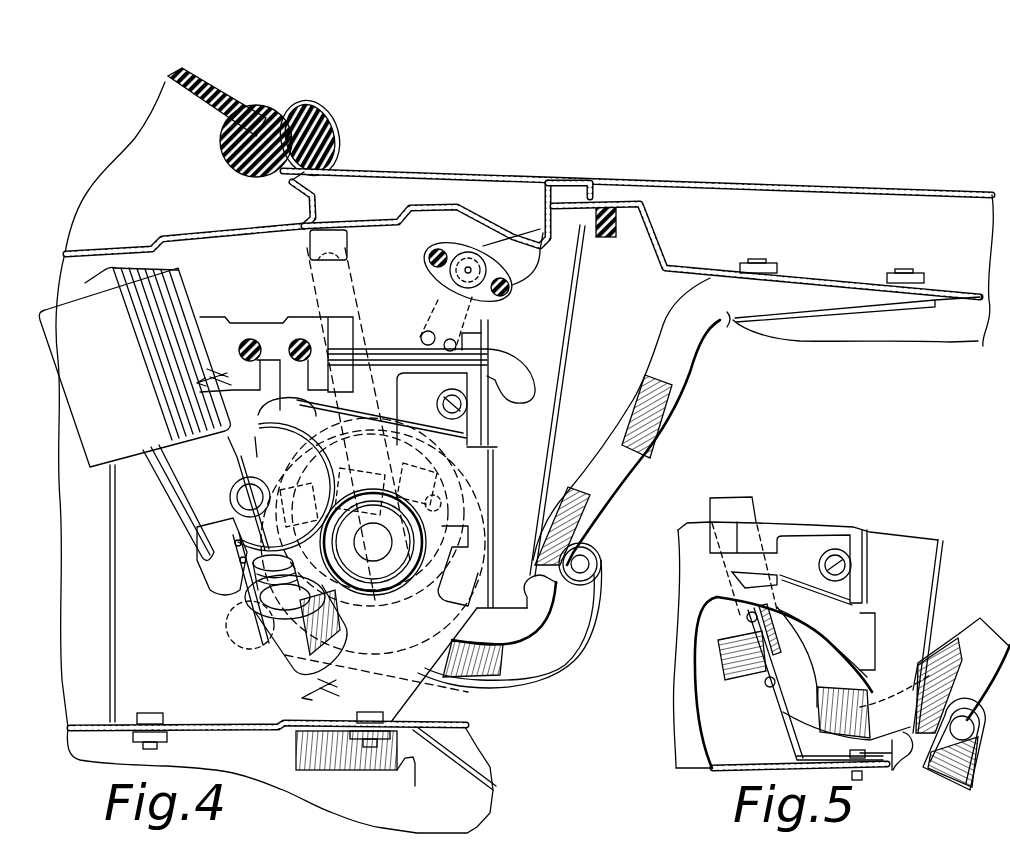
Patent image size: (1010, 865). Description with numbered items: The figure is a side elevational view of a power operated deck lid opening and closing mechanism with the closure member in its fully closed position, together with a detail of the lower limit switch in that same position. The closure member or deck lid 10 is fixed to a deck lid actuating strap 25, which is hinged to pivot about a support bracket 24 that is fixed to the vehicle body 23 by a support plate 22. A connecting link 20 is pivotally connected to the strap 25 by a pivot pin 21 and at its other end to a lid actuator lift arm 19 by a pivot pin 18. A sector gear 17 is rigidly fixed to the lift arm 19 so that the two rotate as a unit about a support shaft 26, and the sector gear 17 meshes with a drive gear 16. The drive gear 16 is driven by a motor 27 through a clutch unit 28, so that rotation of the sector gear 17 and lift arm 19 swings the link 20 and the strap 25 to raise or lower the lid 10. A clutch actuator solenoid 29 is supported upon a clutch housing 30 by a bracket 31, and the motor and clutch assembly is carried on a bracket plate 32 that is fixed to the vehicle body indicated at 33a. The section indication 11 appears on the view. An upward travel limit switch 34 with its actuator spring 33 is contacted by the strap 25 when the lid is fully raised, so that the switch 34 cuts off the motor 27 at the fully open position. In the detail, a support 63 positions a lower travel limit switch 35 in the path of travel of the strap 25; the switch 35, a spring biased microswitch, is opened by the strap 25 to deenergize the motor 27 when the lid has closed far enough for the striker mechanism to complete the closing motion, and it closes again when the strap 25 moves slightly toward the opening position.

In FIG. 4, the deck lid 10 is at (853, 186).
In FIG. 4, the section line 11 is at (240, 541).
In FIG. 4, the drive gear 16 is at (252, 478).
In FIG. 4, the sector gear 17 is at (470, 500).
In FIG. 4, the pivot pin 18 is at (226, 645).
In FIG. 4, the lid actuator lift arm 19 is at (484, 473).
In FIG. 4, the connecting link 20 is at (583, 596).
In FIG. 5, the connecting link 20 is at (970, 770).
In FIG. 4, the pivot pin 21 is at (587, 557).
In FIG. 5, the pivot pin 21 is at (965, 725).
In FIG. 4, the support plate 22 is at (150, 241).
In FIG. 4, the vehicle body 23 is at (413, 171).
In FIG. 4, the support bracket 24 is at (330, 235).
In FIG. 4, the deck lid actuating strap 25 is at (727, 312).
In FIG. 5, the deck lid actuating strap 25 is at (970, 647).
In FIG. 4, the support shaft 26 is at (390, 570).
In FIG. 4, the motor 27 is at (55, 318).
In FIG. 4, the clutch unit 28 is at (167, 480).
In FIG. 4, the clutch actuator solenoid 29 is at (285, 648).
In FIG. 4, the clutch housing 30 is at (166, 515).
In FIG. 4, the bracket 31 is at (230, 598).
In FIG. 4, the bracket plate 32 is at (115, 592).
In FIG. 4, the upward travel limit switch actuator spring 33 is at (438, 302).
In FIG. 4, the vehicle body 33a is at (90, 720).
In FIG. 4, the limit switch 34 is at (430, 250).
In FIG. 5, the lower travel limit switch 35 is at (750, 680).
In FIG. 5, the support 63 is at (787, 713).